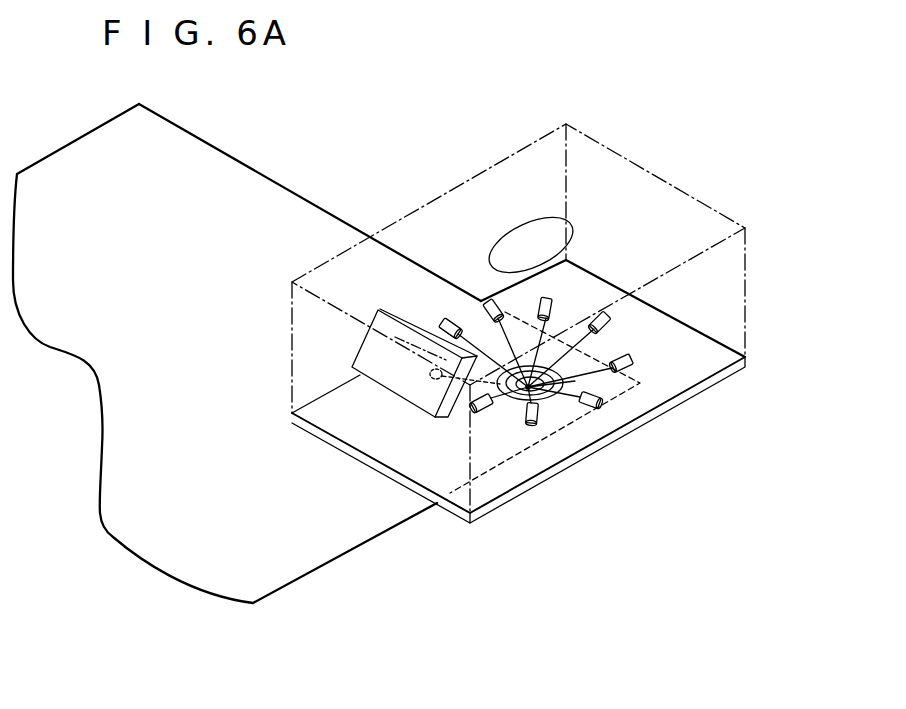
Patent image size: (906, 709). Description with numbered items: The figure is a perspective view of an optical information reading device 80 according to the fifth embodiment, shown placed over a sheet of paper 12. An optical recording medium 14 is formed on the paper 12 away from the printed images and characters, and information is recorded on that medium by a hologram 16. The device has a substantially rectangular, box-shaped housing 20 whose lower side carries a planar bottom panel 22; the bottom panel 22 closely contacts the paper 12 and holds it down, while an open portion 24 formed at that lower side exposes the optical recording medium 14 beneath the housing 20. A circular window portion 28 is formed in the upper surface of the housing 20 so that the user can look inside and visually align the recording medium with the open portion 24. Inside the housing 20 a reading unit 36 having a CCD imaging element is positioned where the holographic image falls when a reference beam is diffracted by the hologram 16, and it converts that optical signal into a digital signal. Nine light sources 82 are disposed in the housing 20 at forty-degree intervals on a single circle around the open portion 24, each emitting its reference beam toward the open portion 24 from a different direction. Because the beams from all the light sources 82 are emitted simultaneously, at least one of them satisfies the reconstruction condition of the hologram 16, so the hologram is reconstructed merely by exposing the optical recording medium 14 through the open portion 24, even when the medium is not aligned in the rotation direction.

The paper 12 is at (290, 565).
The optical recording medium 14 is at (590, 413).
The hologram 16 is at (520, 403).
The housing 20 is at (452, 188).
The bottom panel 22 is at (703, 373).
The open portion 24 is at (575, 381).
The window portion 28 is at (497, 224).
The reading unit 36 is at (392, 378).
The optical information reading device 80 is at (749, 172).
The light sources 82 is at (549, 299).